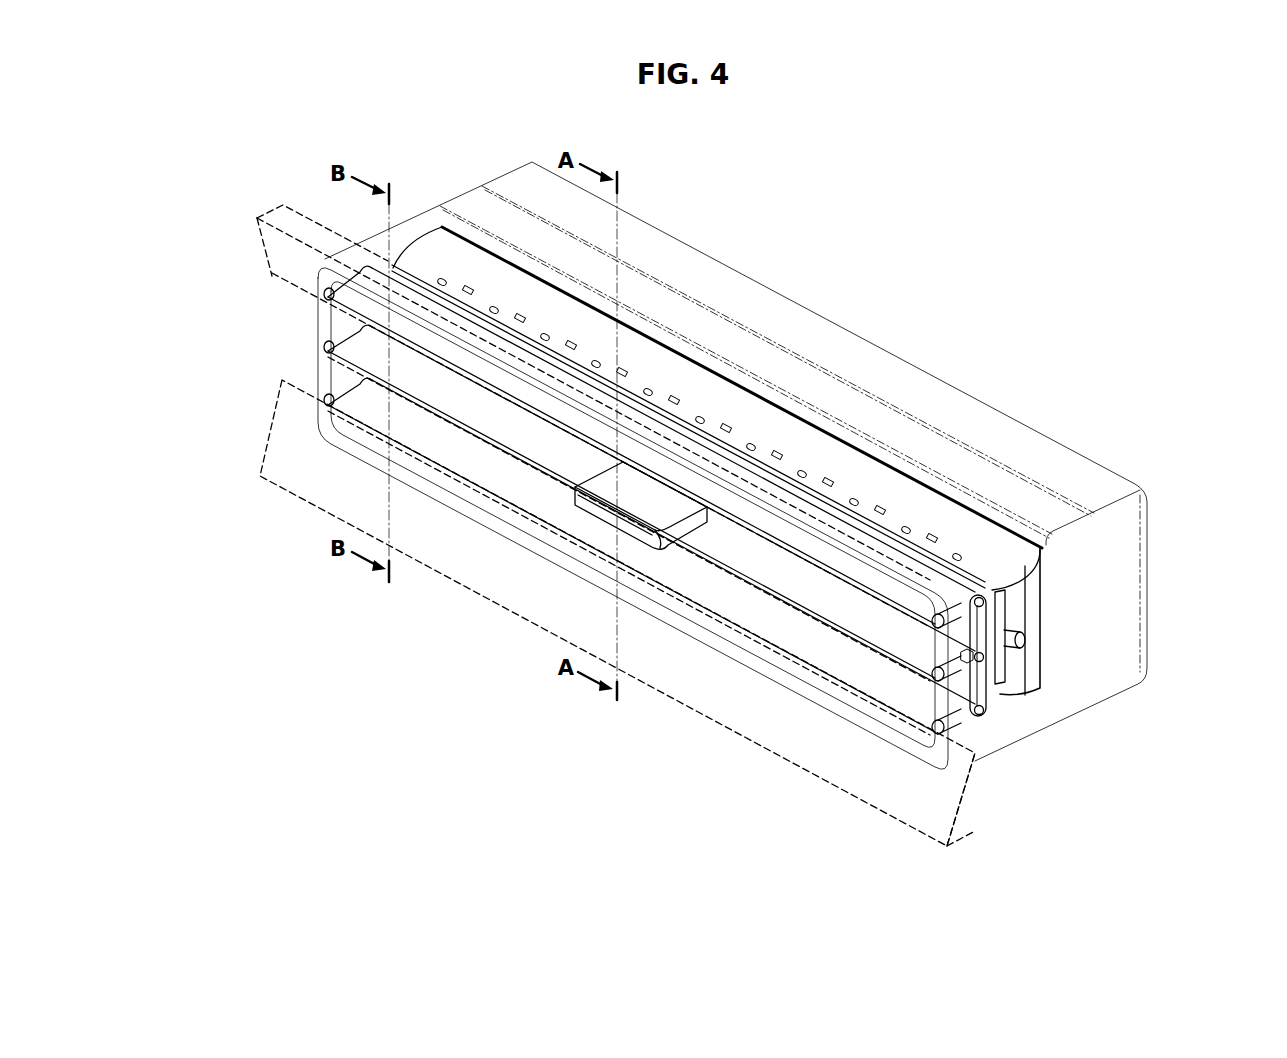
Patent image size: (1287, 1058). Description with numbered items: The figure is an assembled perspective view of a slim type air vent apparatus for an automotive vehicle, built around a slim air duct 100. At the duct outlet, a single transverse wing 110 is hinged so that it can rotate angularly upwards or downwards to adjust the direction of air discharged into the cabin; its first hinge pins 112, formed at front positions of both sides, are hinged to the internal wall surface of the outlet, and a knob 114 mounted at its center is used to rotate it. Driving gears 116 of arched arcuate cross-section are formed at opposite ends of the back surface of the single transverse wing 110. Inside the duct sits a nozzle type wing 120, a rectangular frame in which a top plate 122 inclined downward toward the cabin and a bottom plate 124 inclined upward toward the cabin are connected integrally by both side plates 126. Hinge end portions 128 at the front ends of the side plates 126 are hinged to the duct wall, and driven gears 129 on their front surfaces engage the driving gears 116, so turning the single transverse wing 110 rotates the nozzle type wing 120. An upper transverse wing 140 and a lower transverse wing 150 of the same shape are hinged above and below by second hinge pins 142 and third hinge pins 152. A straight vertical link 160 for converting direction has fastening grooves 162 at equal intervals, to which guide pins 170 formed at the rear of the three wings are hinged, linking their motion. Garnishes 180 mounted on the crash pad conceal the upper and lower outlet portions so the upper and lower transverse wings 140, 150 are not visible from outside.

The slim air duct 100 is at (1130, 660).
The single transverse wing 110 is at (803, 600).
The first hinge pins 112 is at (932, 650).
The knob 114 is at (650, 533).
The driving gears 116 is at (1007, 607).
The nozzle type wing 120 is at (813, 481).
The top plate 122 is at (870, 478).
The bottom plate 124 is at (997, 690).
The side plates 126 is at (1033, 667).
The hinge end portions 128 is at (1012, 628).
The driven gears 129 is at (1033, 655).
The upper transverse wing 140 is at (500, 387).
The second hinge pins 142 is at (322, 280).
The lower transverse wing 150 is at (530, 490).
The third hinge pins 152 is at (328, 403).
The vertical link for converting direction 160 is at (985, 716).
The fastening grooves 162 is at (970, 730).
The guide pins 170 is at (988, 725).
The garnishes 180 is at (298, 280).